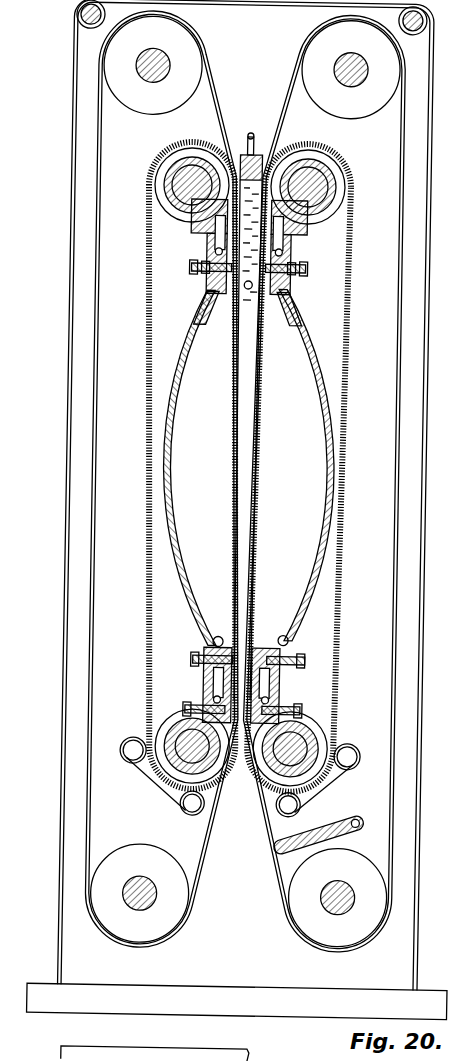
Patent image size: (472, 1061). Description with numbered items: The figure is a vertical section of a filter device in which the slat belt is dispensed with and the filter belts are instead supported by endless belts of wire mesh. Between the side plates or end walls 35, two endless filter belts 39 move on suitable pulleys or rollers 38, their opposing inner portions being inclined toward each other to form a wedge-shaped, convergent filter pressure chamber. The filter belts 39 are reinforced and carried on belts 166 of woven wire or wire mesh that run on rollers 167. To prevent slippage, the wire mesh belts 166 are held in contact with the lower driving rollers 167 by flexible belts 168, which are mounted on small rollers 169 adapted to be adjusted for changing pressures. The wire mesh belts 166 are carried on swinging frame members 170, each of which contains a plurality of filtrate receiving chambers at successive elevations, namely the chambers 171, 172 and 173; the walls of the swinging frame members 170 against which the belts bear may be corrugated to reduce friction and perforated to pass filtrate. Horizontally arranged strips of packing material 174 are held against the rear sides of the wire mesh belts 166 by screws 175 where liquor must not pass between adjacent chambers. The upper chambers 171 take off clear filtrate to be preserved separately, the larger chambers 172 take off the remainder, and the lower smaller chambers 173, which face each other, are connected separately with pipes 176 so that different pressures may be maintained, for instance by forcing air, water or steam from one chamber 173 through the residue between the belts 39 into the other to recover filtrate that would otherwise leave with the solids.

The side plates or end walls 35 is at (425, 90).
The pulleys or rollers 38 is at (378, 110).
The endless filter belts 39 is at (283, 100).
The wire mesh belts 166 is at (151, 232).
The rollers 167 is at (155, 165).
The flexible belts 168 is at (154, 793).
The small rollers 169 is at (134, 758).
The swinging frame members 170 is at (201, 318).
The upper filtrate chambers 171 is at (203, 237).
The larger filtrate chambers 172 is at (199, 338).
The lower smaller filtrate chambers 173 is at (212, 672).
The strips of packing material 174 is at (298, 262).
The screws 175 is at (305, 271).
The pipes 176 is at (197, 681).